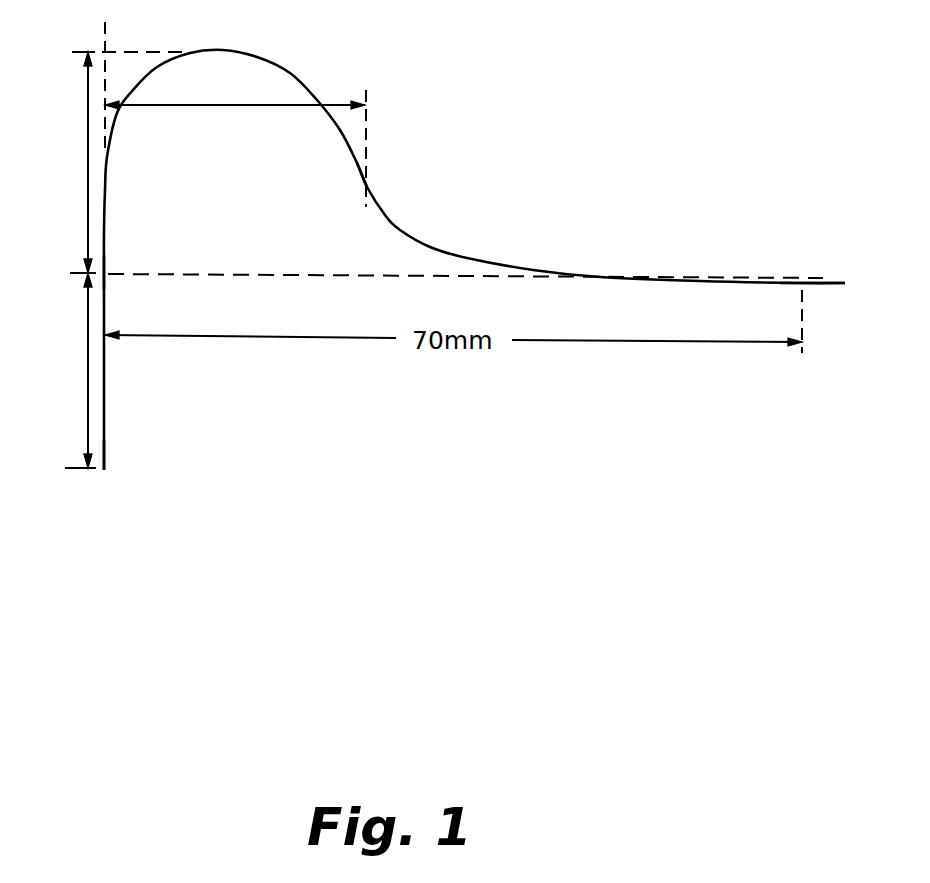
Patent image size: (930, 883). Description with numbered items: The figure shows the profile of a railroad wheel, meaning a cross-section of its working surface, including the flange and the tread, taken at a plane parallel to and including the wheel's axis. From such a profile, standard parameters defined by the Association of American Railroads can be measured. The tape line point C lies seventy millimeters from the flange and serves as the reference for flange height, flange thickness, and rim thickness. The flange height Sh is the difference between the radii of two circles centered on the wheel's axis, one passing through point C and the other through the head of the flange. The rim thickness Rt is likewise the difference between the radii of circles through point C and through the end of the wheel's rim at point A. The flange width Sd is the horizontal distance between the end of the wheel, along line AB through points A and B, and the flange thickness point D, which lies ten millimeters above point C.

The end of the wheel's rim A is at (114, 466).
The point on the end of the wheel B is at (114, 266).
The tape line point C is at (803, 270).
The flange thickness point D is at (376, 181).
The flange height Sh is at (73, 162).
The flange width Sd is at (235, 120).
The rim thickness Rt is at (73, 370).